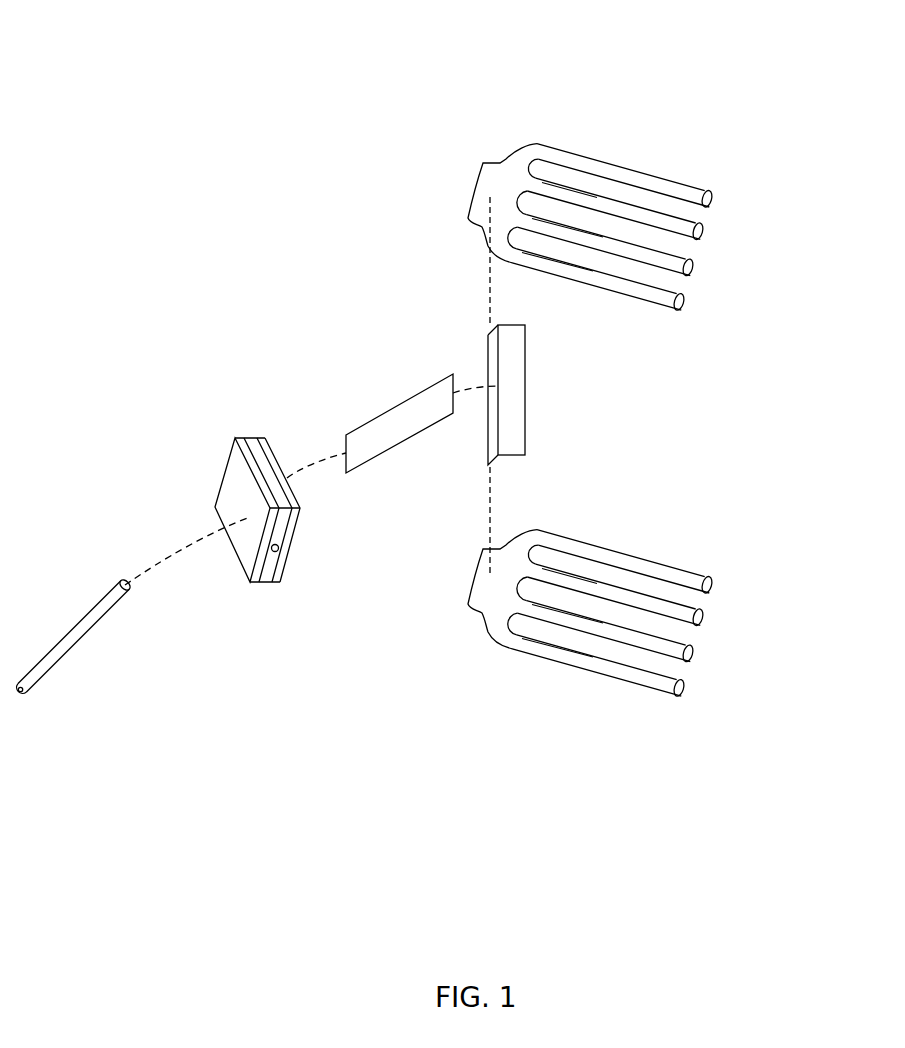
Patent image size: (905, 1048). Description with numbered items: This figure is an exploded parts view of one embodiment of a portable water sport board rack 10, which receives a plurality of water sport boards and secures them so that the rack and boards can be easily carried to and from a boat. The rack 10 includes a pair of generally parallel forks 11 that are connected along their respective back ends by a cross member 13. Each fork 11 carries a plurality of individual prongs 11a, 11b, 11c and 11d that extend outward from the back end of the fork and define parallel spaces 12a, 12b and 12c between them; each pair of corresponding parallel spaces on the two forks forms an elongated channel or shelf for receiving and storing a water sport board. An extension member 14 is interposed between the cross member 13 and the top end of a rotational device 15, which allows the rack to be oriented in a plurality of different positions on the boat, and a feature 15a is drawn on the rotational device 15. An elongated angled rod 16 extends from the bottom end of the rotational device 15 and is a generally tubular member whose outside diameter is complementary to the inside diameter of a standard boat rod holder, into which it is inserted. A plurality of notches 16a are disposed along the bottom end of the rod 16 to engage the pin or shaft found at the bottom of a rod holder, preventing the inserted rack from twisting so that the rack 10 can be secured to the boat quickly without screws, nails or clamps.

The portable water sport board rack 10 is at (156, 84).
The fork 11 is at (512, 208).
The prong 11a is at (713, 195).
The prong 11b is at (702, 230).
The prong 11c is at (697, 273).
The prong 11d is at (685, 297).
The parallel space 12a is at (688, 213).
The parallel space 12b is at (687, 249).
The parallel space 12c is at (678, 288).
The cross member 13 is at (518, 398).
The extension member 14 is at (408, 430).
The rotational device 15 is at (238, 497).
The aperture 15a is at (278, 550).
The angled rod 16 is at (68, 645).
The notch 16a is at (25, 693).